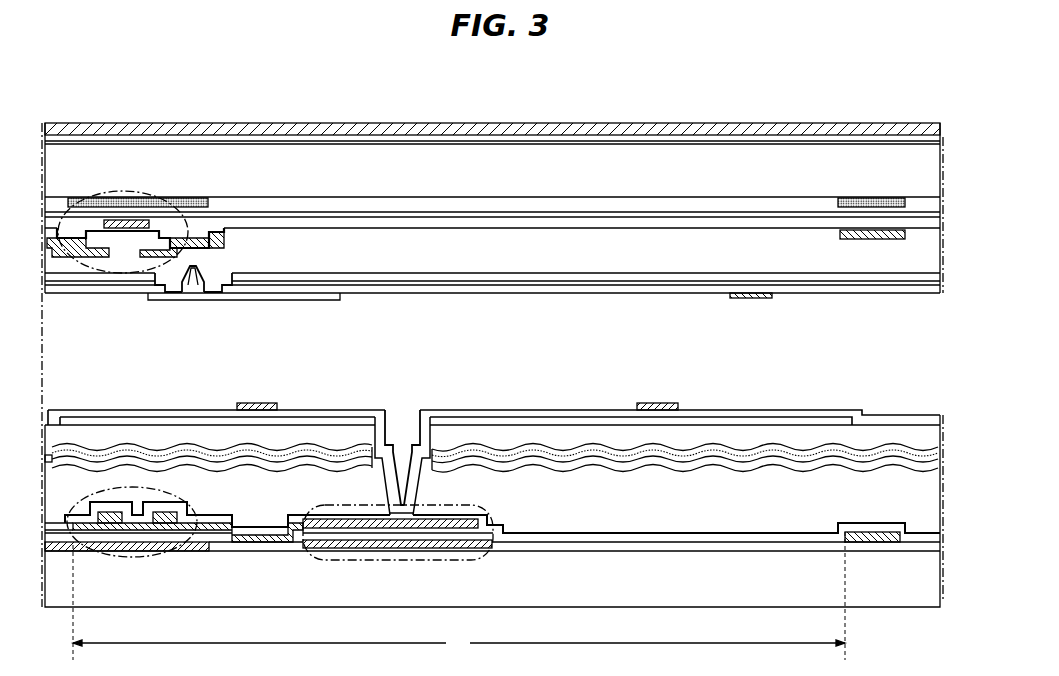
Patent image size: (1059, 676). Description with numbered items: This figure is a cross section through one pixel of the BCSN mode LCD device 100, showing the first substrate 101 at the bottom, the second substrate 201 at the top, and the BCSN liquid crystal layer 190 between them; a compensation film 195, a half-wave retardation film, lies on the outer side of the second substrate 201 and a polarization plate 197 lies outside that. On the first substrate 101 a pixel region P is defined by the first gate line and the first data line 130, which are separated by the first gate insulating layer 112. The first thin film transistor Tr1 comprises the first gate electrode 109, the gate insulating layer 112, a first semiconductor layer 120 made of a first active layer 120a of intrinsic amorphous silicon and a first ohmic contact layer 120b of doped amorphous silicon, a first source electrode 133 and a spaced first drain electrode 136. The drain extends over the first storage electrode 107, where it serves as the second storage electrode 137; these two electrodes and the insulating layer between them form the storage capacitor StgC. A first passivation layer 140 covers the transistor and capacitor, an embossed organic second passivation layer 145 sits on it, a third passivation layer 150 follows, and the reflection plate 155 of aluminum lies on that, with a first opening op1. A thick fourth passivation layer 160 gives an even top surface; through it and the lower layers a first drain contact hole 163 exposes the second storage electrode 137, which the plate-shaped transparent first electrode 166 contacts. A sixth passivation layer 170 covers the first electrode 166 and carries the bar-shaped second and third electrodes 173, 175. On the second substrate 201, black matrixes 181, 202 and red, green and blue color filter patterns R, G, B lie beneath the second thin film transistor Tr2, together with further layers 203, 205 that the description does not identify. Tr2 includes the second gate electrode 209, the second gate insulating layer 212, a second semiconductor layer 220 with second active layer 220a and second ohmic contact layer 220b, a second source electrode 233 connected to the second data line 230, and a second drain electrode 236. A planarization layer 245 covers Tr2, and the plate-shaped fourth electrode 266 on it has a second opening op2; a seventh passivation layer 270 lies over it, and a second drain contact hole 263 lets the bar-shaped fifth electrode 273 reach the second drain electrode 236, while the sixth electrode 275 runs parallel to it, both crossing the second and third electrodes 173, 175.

The BCSN mode LCD device 100 is at (887, 103).
The first substrate 101 is at (903, 605).
The first storage electrode 107 is at (360, 551).
The first gate electrode 109 is at (138, 556).
The first gate insulating layer 112 is at (614, 548).
The first semiconductor layer 120 is at (174, 560).
The first active layer 120a is at (130, 547).
The first ohmic contact layer 120b is at (176, 547).
The first data line 130 is at (870, 529).
The first source electrode 133 is at (101, 511).
The first drain electrode 136 is at (160, 511).
The second storage electrode 137 is at (340, 519).
The first passivation layer 140 is at (708, 535).
The second passivation layer 145 is at (188, 483).
The third passivation layer 150 is at (247, 468).
The reflection plate 155 is at (312, 460).
The fourth passivation layer 160 is at (106, 435).
The first drain contact hole 163 is at (404, 452).
The first electrode 166 is at (155, 418).
The sixth passivation layer 170 is at (305, 412).
The second electrode 173 is at (255, 402).
The third electrode 175 is at (652, 402).
The black matrix 181 is at (868, 198).
The BCSN liquid crystal layer 190 is at (885, 377).
The compensation film 195 is at (625, 137).
The polarization plate 197 is at (583, 121).
The second substrate 201 is at (908, 170).
The black matrix 202 is at (118, 198).
The overcoat layer 203 is at (313, 205).
The first insulating layer 205 is at (265, 215).
The second gate electrode 209 is at (128, 220).
The second gate insulating layer 212 is at (538, 229).
The second semiconductor layer 220 is at (144, 202).
The second active layer 220a is at (176, 232).
The second ohmic contact layer 220b is at (199, 243).
The second data line 230 is at (870, 241).
The second source electrode 233 is at (82, 260).
The second drain electrode 236 is at (157, 286).
The planarization layer 245 is at (583, 286).
The second drain contact hole 263 is at (194, 298).
The fourth electrode 266 is at (622, 277).
The seventh passivation layer 270 is at (665, 294).
The fifth electrode 273 is at (278, 301).
The sixth electrode 275 is at (752, 299).
The first thin film transistor Tr1 is at (104, 558).
The second thin film transistor Tr2 is at (108, 193).
The first opening op1 is at (394, 432).
The second opening op2 is at (219, 287).
The storage capacitor StgC is at (406, 561).
The pixel region P is at (459, 596).
The red color filter pattern R is at (56, 205).
The green color filter pattern G is at (505, 205).
The blue color filter pattern B is at (921, 203).